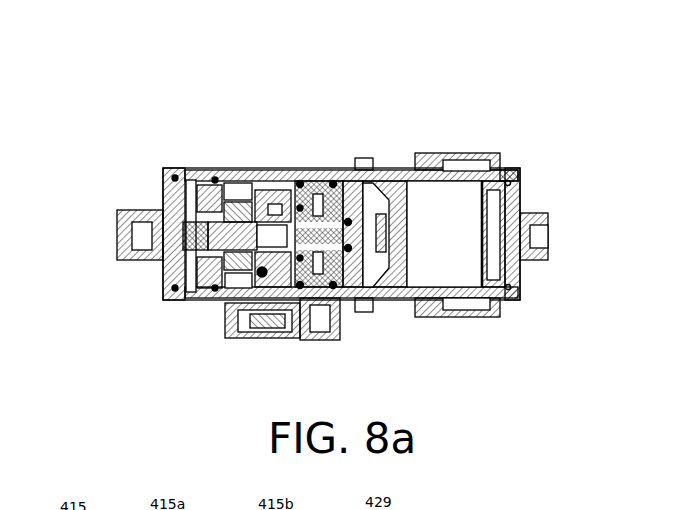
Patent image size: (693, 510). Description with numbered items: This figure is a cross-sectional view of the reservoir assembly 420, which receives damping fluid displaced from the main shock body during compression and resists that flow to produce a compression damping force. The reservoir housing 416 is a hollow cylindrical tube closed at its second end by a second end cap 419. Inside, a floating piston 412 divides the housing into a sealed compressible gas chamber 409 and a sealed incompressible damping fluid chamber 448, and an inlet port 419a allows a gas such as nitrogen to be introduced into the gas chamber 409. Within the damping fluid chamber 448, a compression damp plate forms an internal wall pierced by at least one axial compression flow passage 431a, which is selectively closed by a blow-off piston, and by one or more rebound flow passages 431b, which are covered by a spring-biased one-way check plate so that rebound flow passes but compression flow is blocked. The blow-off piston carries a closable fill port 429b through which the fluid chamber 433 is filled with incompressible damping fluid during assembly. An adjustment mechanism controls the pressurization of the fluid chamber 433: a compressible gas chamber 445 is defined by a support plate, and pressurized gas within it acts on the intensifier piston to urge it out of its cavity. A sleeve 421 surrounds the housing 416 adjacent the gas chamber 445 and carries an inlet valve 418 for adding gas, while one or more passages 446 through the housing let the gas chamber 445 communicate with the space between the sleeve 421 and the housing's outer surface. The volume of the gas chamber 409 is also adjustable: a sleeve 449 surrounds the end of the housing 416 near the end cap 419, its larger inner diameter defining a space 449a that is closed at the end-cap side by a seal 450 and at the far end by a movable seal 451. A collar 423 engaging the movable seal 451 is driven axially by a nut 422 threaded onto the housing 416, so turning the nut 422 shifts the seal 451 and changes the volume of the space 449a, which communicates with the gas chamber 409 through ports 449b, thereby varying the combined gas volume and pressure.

The reservoir housing 416 is at (223, 168).
The closable fill port 429b is at (240, 182).
The rebound flow passage 431b is at (190, 170).
The compression flow passage 431a is at (210, 262).
The fluid chamber 433 is at (273, 198).
The passage 446 is at (325, 186).
The compressible gas chamber 445 is at (333, 170).
The movable seal 451 is at (407, 272).
The collar 423 is at (403, 170).
The gas chamber 409 is at (426, 220).
The sleeve 449 is at (465, 170).
The space 449a is at (500, 170).
The port 449b is at (493, 174).
The seal 450 is at (503, 174).
The second end cap 419 is at (520, 283).
The inlet port 419a is at (548, 242).
The floating piston 412 is at (487, 313).
The nut 422 is at (363, 157).
The inlet valve 418 is at (282, 337).
The sleeve 421 is at (340, 330).
The damping fluid chamber 448 is at (227, 310).
The reservoir assembly 420 is at (513, 509).